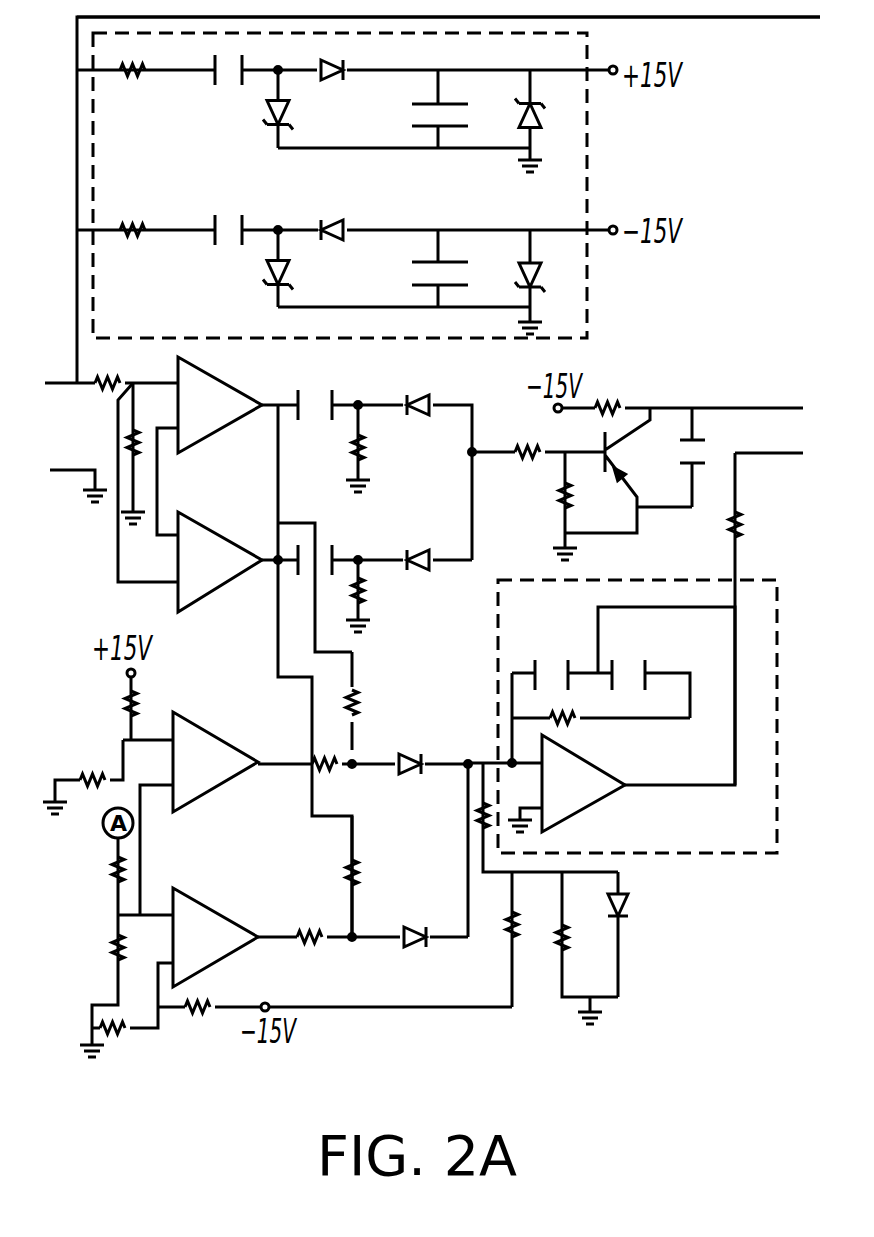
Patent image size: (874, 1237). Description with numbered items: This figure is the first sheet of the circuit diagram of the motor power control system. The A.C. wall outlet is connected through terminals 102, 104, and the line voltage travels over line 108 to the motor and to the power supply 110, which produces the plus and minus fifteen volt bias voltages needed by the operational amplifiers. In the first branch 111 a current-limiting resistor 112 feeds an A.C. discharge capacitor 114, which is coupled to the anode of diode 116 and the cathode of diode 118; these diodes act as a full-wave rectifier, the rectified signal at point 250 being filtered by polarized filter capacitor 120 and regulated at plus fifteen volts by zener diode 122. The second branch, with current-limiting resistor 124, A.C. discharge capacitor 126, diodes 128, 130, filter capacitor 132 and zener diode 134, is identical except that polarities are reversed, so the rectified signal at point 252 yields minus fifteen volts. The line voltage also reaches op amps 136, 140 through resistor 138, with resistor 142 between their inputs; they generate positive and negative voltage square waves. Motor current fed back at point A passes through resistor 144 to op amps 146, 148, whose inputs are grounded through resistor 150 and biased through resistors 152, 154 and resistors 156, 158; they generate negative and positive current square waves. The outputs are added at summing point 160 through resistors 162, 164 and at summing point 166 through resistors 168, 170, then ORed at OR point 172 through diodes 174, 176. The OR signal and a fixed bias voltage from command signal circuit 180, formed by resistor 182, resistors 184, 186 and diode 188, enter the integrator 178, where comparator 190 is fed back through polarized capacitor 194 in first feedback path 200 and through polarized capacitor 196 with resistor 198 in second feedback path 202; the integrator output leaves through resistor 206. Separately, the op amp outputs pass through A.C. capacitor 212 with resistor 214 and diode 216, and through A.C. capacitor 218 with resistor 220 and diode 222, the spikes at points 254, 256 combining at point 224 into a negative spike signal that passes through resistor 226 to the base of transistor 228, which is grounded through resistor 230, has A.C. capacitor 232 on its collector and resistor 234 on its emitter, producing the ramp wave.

The terminal 102 is at (72, 372).
The terminal 104 is at (88, 476).
The line 108 is at (690, 20).
The power supply 110 is at (606, 189).
The first branch 111 is at (469, 158).
The current-limiting resistor 112 is at (143, 81).
The A.C. discharge capacitor 114 is at (232, 86).
The diode 116 is at (336, 66).
The diode 118 is at (304, 110).
The polarized filter capacitor 120 is at (411, 112).
The zener diode 122 is at (506, 121).
The current-limiting resistor 124 is at (146, 203).
The A.C. discharge capacitor 126 is at (233, 208).
The diode 128 is at (353, 210).
The diode 130 is at (268, 272).
The filter capacitor 132 is at (412, 264).
The zener diode 134 is at (526, 270).
The operational amplifier 136 is at (206, 392).
The resistor 138 is at (106, 392).
The operational amplifier 140 is at (210, 505).
The resistor 142 is at (128, 445).
The resistor 144 is at (112, 874).
The operational amplifier 146 is at (210, 740).
The operational amplifier 148 is at (202, 918).
The resistor 150 is at (112, 950).
The resistor 152 is at (126, 702).
The resistor 154 is at (96, 795).
The resistor 156 is at (202, 1006).
The resistor 158 is at (114, 1028).
The summing point 160 is at (354, 766).
The resistor 162 is at (354, 692).
The resistor 164 is at (324, 776).
The summing point 166 is at (345, 965).
The resistor 168 is at (354, 876).
The resistor 170 is at (330, 926).
The OR point 172 is at (468, 762).
The diode 174 is at (420, 776).
The diode 176 is at (412, 928).
The integrator 178 is at (793, 735).
The command signal circuit 180 is at (635, 963).
The resistor 182 is at (516, 926).
The resistor 184 is at (480, 822).
The resistor 186 is at (566, 947).
The diode 188 is at (630, 900).
The comparator 190 is at (600, 790).
The polarized capacitor 194 is at (537, 664).
The polarized capacitor 196 is at (618, 666).
The resistor 198 is at (566, 722).
The first feedback path 200 is at (506, 682).
The second feedback path 202 is at (703, 682).
The resistor 206 is at (738, 526).
The A.C. capacitor 212 is at (302, 398).
The resistor 214 is at (350, 452).
The diode 216 is at (440, 405).
The A.C. capacitor 218 is at (294, 556).
The resistor 220 is at (364, 596).
The diode 222 is at (420, 557).
The point 224 is at (469, 455).
The resistor 226 is at (542, 449).
The transistor 228 is at (616, 447).
The resistor 230 is at (554, 506).
The A.C. capacitor 232 is at (702, 456).
The resistor 234 is at (616, 403).
The point 250 is at (272, 80).
The point 252 is at (282, 226).
The point 254 is at (360, 402).
The point 256 is at (362, 542).